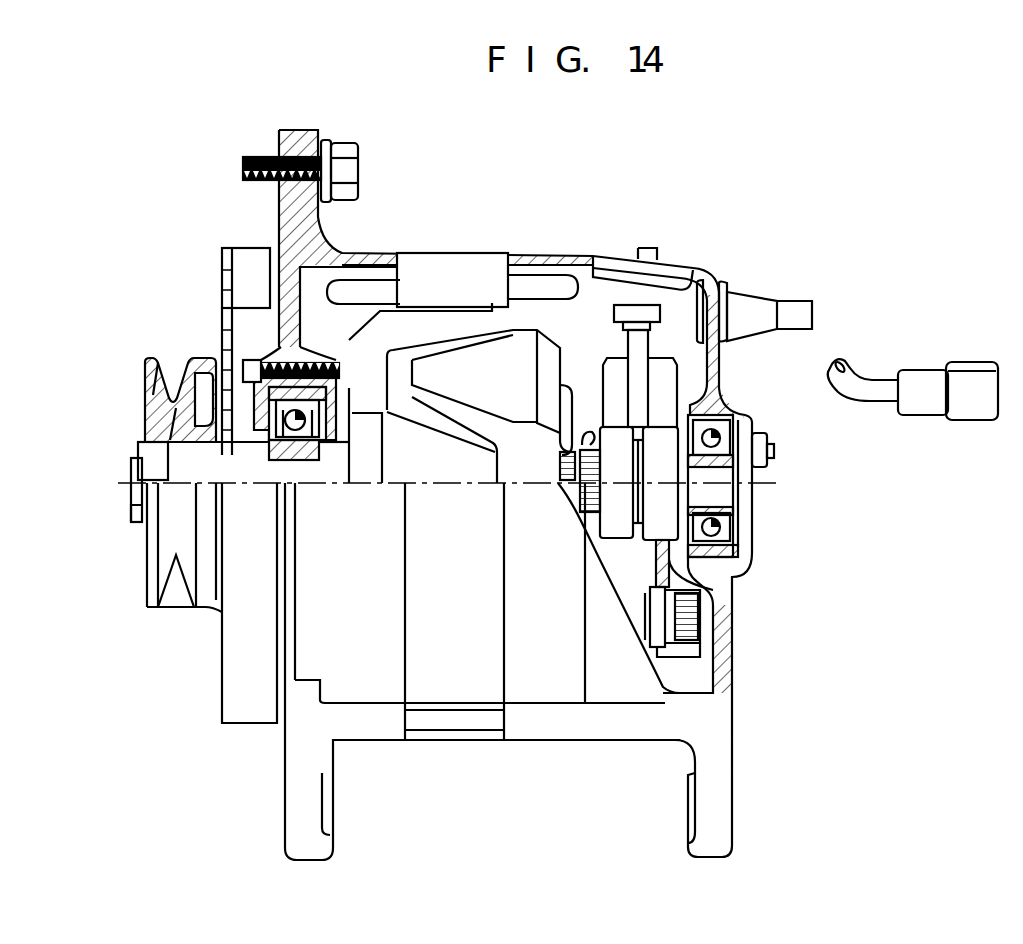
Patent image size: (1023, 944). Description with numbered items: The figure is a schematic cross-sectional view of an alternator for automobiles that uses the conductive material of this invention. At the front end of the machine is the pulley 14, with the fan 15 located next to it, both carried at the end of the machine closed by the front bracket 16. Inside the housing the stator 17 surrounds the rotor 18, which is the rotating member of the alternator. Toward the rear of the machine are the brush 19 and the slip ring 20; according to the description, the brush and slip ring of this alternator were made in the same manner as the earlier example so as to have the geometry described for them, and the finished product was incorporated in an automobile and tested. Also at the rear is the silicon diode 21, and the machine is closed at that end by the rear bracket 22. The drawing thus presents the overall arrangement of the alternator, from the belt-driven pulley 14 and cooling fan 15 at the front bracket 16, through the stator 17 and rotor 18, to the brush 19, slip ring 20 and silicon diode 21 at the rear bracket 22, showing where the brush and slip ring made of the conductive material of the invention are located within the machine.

The pulley 14 is at (140, 361).
The fan 15 is at (248, 268).
The front bracket 16 is at (319, 128).
The stator 17 is at (493, 253).
The rotor 18 is at (510, 358).
The brush 19 is at (663, 370).
The slip ring 20 is at (663, 462).
The silicon diode 21 is at (700, 604).
The rear bracket 22 is at (712, 776).